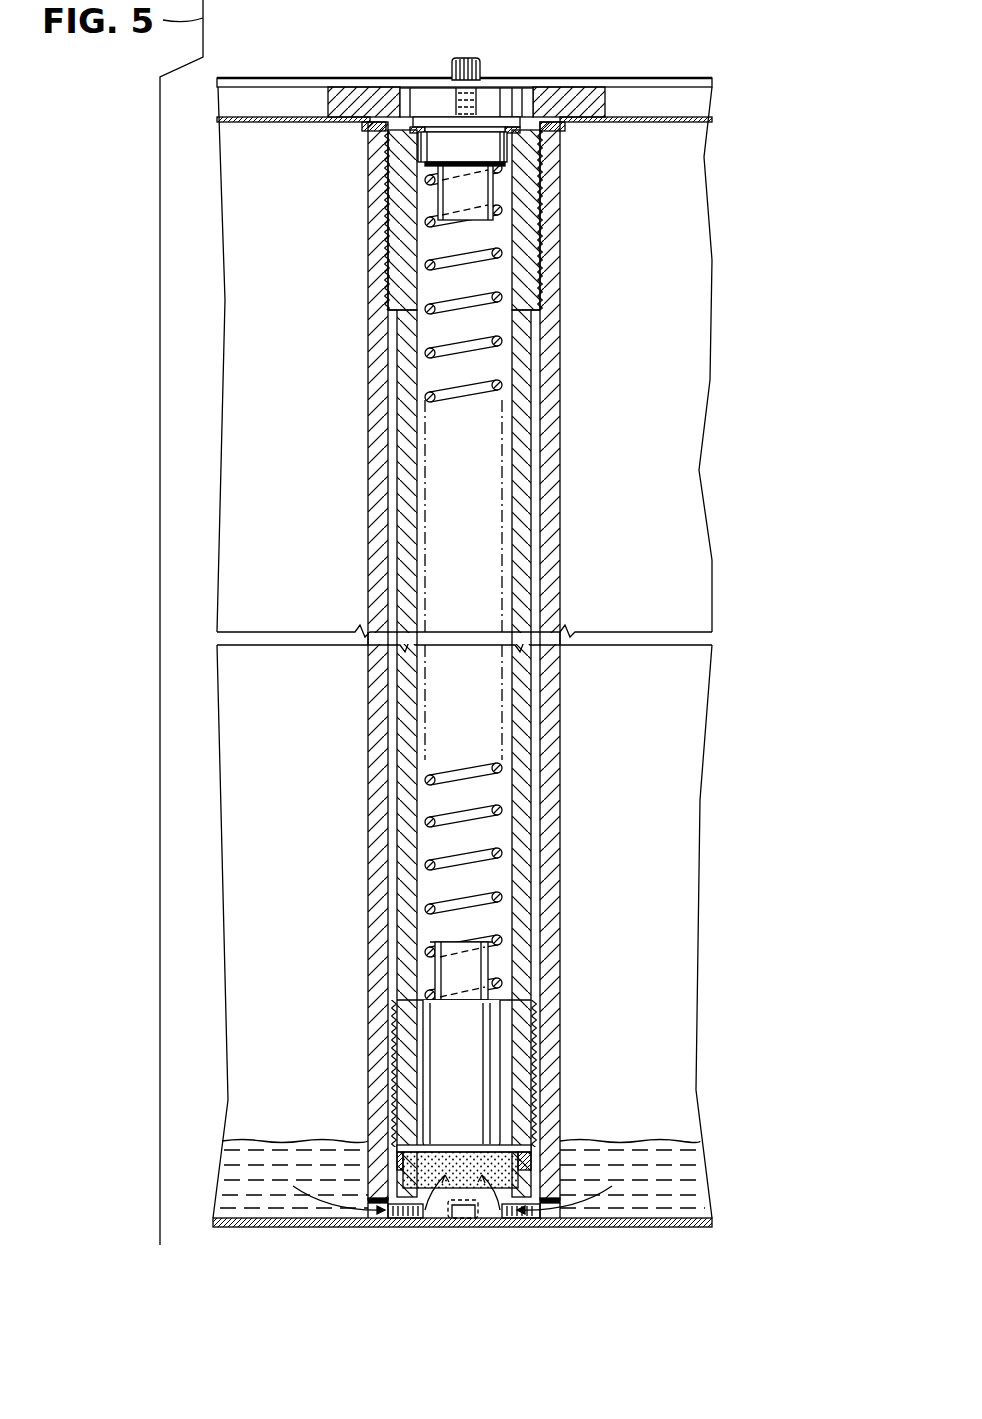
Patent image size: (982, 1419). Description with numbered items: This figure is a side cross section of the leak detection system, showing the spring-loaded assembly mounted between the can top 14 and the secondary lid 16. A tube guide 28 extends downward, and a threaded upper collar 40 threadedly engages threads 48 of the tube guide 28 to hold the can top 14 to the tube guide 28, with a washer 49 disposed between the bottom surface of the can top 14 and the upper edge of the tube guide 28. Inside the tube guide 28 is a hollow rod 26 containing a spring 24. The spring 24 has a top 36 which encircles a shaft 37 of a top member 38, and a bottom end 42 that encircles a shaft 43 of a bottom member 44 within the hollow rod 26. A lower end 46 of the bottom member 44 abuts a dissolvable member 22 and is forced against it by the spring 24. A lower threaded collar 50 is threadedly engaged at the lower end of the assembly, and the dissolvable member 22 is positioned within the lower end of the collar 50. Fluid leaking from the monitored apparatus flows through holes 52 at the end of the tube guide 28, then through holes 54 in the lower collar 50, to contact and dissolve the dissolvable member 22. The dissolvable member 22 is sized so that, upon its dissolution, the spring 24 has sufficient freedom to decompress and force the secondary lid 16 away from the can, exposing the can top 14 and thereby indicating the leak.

The top 14 is at (705, 118).
The secondary lid 16 is at (675, 83).
The dissolvable member 22 is at (525, 1155).
The spring 24 is at (480, 818).
The hollow rod 26 is at (523, 517).
The tube guide 28 is at (552, 468).
The top 36 is at (508, 172).
The shaft 37 is at (488, 197).
The top member 38 is at (420, 148).
The threaded upper collar 40 is at (565, 92).
The bottom end 42 is at (437, 988).
The shaft 43 is at (445, 963).
The bottom member 44 is at (438, 1063).
The lower end 46 is at (398, 1148).
The threads 48 is at (387, 243).
The washer 49 is at (560, 128).
The lower threaded collar 50 is at (522, 1188).
The holes 52 is at (598, 1222).
The holes 54 is at (457, 1217).